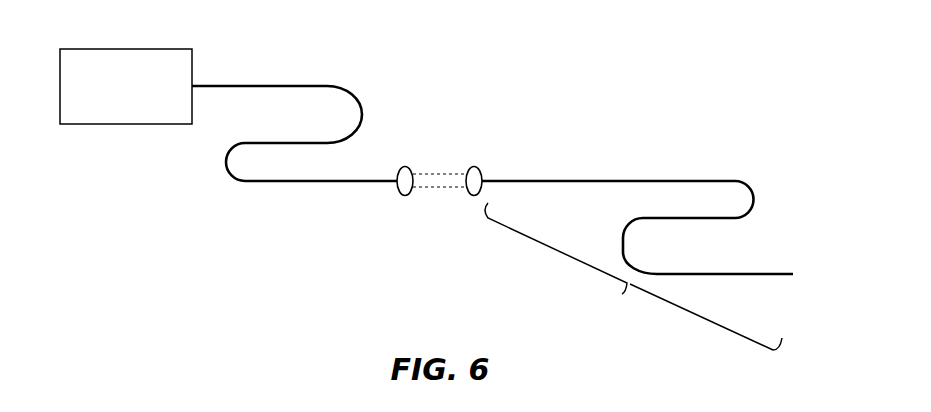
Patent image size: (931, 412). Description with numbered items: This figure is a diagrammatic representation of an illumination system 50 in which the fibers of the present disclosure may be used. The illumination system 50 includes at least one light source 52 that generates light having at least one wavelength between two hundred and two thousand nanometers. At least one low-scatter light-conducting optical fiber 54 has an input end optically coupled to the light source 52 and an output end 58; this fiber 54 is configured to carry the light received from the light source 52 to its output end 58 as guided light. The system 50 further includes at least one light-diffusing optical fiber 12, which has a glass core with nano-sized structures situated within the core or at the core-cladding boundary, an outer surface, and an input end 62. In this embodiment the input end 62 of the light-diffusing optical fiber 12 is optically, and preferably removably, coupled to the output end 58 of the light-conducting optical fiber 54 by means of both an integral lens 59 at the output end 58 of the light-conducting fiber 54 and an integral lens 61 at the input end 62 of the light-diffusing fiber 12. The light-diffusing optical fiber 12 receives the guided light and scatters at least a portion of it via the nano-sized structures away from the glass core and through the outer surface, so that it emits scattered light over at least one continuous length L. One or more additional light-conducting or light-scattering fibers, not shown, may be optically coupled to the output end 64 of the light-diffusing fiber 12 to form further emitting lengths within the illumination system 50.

The illumination system 50 is at (232, 287).
The light source 52 is at (109, 99).
The low-scatter light-conducting optical fiber 54 is at (250, 86).
The light-diffusing optical fiber 12 is at (628, 180).
The output end 58 is at (396, 177).
The integral lens 59 is at (406, 190).
The integral lens 61 is at (473, 190).
The input end 62 is at (483, 177).
The output end 64 is at (778, 273).
The continuous length L is at (633, 276).